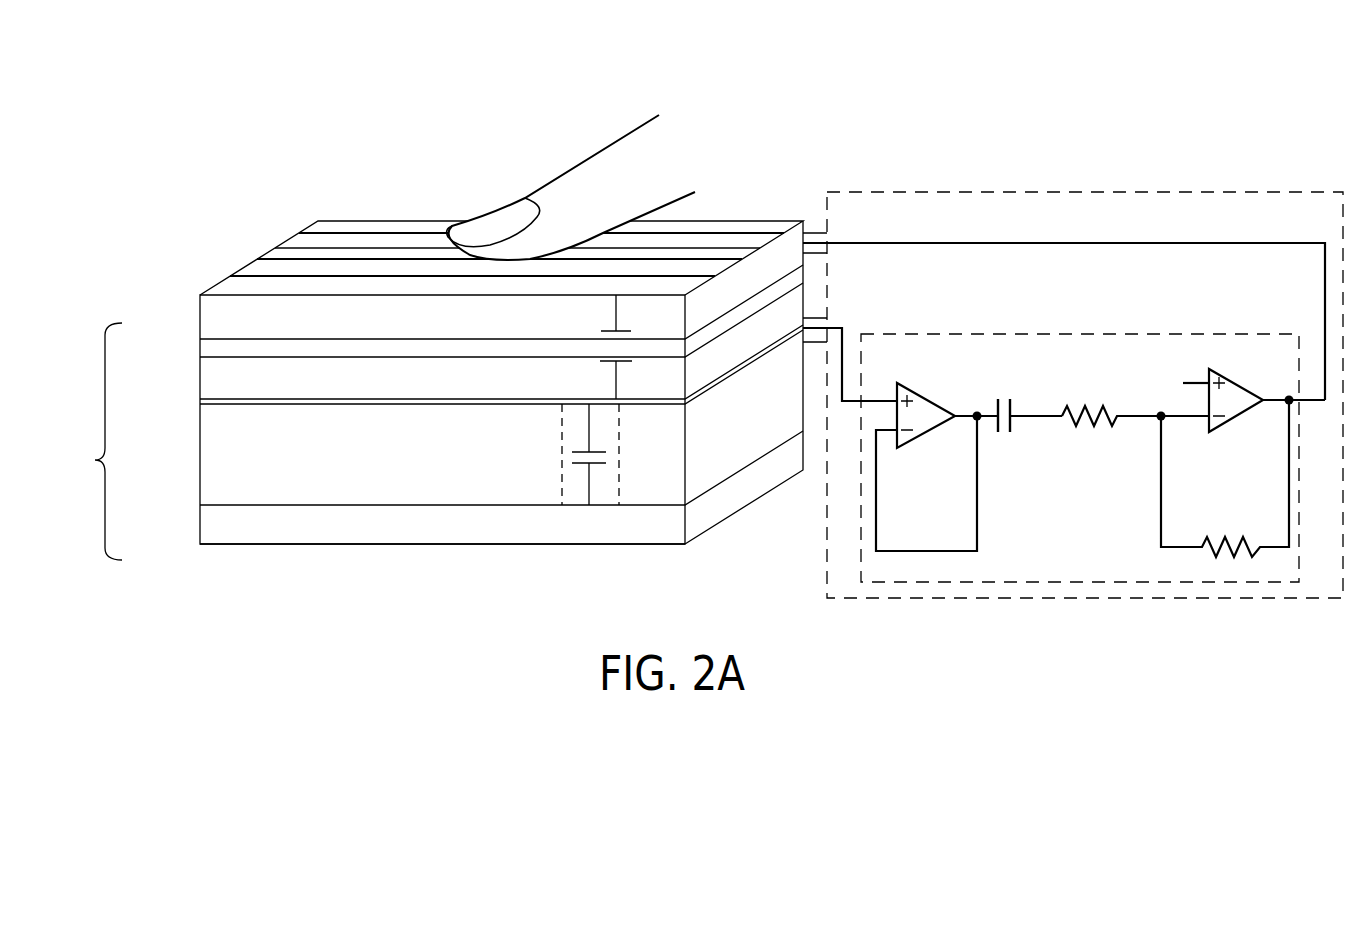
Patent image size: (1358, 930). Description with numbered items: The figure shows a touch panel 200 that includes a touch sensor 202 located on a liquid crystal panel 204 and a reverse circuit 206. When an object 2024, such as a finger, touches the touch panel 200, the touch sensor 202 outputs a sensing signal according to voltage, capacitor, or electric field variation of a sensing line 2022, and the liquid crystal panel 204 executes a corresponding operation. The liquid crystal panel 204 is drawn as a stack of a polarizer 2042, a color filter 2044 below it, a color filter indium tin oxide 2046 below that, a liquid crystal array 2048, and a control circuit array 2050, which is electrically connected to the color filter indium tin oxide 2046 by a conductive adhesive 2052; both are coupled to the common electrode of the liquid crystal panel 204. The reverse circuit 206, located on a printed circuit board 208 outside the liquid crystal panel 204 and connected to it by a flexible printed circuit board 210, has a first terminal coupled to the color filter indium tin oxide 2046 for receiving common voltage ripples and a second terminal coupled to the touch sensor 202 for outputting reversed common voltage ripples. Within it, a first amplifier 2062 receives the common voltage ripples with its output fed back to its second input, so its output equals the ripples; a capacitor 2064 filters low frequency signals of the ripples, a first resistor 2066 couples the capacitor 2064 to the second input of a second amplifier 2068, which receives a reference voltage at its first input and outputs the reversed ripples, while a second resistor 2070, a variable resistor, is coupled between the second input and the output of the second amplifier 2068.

The touch panel 200 is at (1043, 87).
The touch sensor 202 is at (206, 311).
The sensing line 2022 is at (340, 230).
The object 2024 is at (593, 168).
The liquid crystal panel 204 is at (93, 460).
The polarizer 2042 is at (212, 348).
The color filter 2044 is at (212, 385).
The color filter indium tin oxide 2046 is at (224, 403).
The liquid crystal array 2048 is at (212, 488).
The control circuit array 2050 is at (212, 533).
The conductive adhesive 2052 is at (619, 472).
The reverse circuit 206 is at (1190, 334).
The printed circuit board 208 is at (1182, 192).
The flexible printed circuit board 210 is at (814, 236).
The first amplifier 2062 is at (920, 388).
The capacitor 2064 is at (1002, 436).
The first resistor 2066 is at (1089, 435).
The second amplifier 2068 is at (1225, 370).
The second resistor 2070 is at (1232, 538).